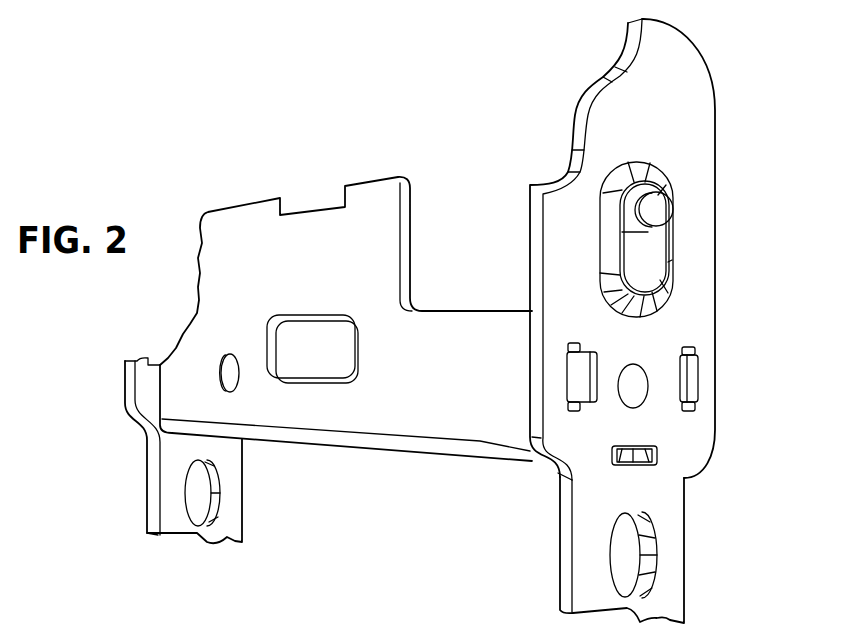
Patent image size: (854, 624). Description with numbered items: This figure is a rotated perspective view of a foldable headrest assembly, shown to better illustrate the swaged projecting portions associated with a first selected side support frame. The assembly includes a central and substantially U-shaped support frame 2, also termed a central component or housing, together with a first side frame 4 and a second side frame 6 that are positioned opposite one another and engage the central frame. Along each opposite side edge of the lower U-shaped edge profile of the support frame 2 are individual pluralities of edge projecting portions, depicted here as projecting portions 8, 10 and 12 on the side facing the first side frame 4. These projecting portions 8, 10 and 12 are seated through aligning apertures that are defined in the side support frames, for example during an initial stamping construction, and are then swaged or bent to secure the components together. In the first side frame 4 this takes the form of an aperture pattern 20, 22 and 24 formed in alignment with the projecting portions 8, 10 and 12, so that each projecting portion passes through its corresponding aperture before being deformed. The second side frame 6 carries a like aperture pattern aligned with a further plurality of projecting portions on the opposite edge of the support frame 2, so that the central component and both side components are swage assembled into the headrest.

The support frame 2 is at (421, 384).
The first side frame 4 is at (560, 470).
The second side frame 6 is at (233, 465).
The projecting portion 8 is at (573, 370).
The projecting portion 10 is at (698, 378).
The projecting portion 12 is at (635, 470).
The aperture 20 is at (562, 405).
The aperture 22 is at (697, 407).
The aperture 24 is at (657, 455).